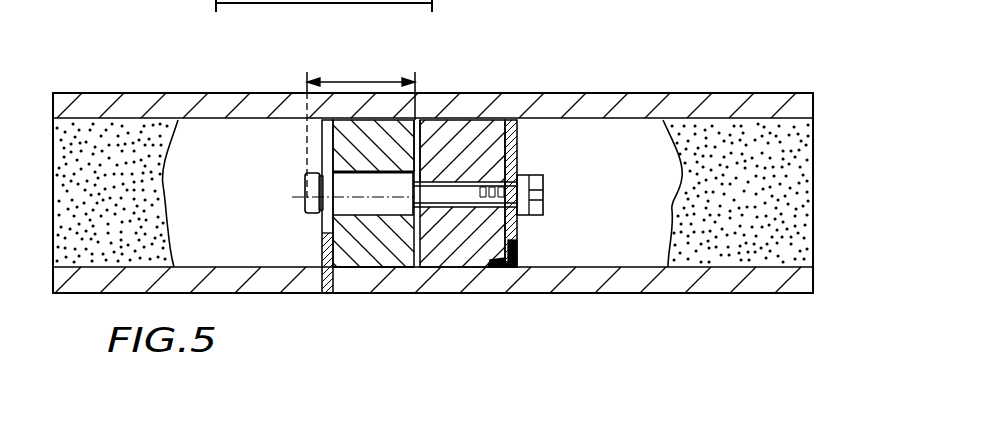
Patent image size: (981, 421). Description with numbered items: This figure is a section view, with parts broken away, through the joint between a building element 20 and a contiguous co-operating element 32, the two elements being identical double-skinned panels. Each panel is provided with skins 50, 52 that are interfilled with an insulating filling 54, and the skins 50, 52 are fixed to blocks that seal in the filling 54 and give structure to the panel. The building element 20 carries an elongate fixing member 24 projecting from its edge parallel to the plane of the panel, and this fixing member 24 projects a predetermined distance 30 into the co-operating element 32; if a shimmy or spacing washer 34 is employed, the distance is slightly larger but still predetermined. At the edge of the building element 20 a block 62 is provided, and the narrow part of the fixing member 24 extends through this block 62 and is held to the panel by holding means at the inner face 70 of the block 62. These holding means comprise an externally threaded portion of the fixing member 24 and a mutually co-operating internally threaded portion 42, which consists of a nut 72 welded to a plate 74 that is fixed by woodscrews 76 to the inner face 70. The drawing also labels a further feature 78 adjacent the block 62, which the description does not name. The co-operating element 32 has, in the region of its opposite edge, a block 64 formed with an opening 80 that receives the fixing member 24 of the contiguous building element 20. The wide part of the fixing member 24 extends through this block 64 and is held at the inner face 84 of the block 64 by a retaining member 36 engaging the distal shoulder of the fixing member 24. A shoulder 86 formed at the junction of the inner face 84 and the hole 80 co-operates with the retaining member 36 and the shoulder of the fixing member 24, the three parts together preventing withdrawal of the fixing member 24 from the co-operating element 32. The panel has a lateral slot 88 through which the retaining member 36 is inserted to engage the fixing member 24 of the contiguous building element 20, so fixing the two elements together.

The building element 20 is at (754, 86).
The elongate fixing member 24 is at (352, 172).
The predetermined distance 30 is at (352, 80).
The co-operating element 32 is at (99, 85).
The shimmy or spacing washer 34 is at (425, 207).
The retaining member 36 is at (300, 110).
The internally threaded portion of holding means 42 is at (530, 150).
The skin 50 is at (624, 108).
The skin 52 is at (628, 280).
The insulating filling 54 is at (134, 148).
The block 62 is at (478, 133).
The block 64 is at (405, 253).
The inner face of block 62 70 is at (515, 266).
The nut 72 is at (522, 180).
The plate 74 is at (523, 230).
The woodscrews 76 is at (490, 272).
The slot 78 is at (462, 150).
The opening 80 is at (365, 253).
The inner face of block 64 84 is at (320, 234).
The shoulder 86 is at (308, 214).
The lateral slot 88 is at (322, 296).